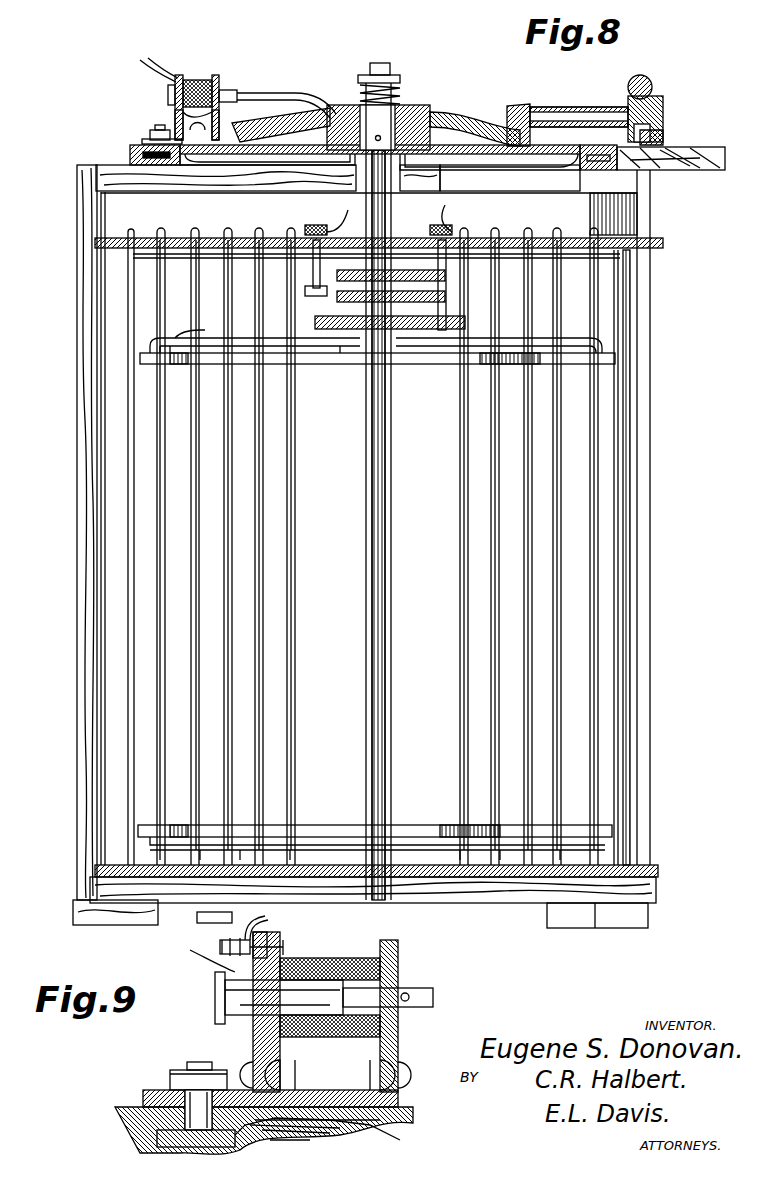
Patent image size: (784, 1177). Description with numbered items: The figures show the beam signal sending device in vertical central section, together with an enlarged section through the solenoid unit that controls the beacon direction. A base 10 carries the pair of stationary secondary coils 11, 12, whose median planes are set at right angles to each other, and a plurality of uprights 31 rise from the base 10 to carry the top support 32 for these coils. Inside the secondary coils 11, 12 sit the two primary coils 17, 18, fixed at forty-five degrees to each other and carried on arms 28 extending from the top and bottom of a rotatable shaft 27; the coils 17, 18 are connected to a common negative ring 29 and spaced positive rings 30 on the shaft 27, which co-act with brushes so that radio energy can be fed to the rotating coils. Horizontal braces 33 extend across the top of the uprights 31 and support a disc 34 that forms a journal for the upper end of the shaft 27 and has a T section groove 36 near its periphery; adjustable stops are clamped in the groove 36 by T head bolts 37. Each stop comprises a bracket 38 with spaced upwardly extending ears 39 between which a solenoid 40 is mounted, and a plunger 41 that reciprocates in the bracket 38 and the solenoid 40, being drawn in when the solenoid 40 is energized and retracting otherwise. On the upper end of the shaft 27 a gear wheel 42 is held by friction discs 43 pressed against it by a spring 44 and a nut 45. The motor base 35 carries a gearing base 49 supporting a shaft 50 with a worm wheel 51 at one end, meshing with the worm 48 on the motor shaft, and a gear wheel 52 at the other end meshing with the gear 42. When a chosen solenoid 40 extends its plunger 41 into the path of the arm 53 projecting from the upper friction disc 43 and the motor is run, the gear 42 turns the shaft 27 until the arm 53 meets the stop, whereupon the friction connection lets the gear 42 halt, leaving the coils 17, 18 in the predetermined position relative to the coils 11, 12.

In FIG. 8, the base 10 is at (655, 896).
In FIG. 8, the secondary coil 11 is at (590, 230).
In FIG. 8, the secondary coil 12 is at (628, 314).
In FIG. 8, the primary coil 17 is at (550, 422).
In FIG. 8, the primary coil 18 is at (157, 432).
In FIG. 8, the rotatable shaft 27 is at (392, 642).
In FIG. 8, the arm 28 is at (610, 358).
In FIG. 8, the common negative ring 29 is at (414, 252).
In FIG. 8, the positive ring 30 is at (340, 324).
In FIG. 8, the upright 31 is at (86, 300).
In FIG. 8, the top support 32 is at (666, 246).
In FIG. 8, the horizontal brace 33 is at (116, 172).
In FIG. 8, the disc 34 is at (243, 156).
In FIG. 9, the disc 34 is at (130, 1122).
In FIG. 8, the motor base 35 is at (700, 168).
In FIG. 8, the T section groove 36 is at (612, 158).
In FIG. 9, the T section groove 36 is at (157, 1141).
In FIG. 8, the T head bolt 37 is at (152, 134).
In FIG. 9, the T head bolt 37 is at (170, 1080).
In FIG. 8, the bracket 38 is at (144, 142).
In FIG. 9, the bracket 38 is at (143, 1097).
In FIG. 8, the arm or ear 39 is at (216, 84).
In FIG. 9, the arm or ear 39 is at (399, 954).
In FIG. 8, the solenoid 40 is at (188, 78).
In FIG. 9, the solenoid 40 is at (328, 960).
In FIG. 8, the plunger 41 is at (238, 92).
In FIG. 9, the plunger 41 is at (433, 997).
In FIG. 8, the gear wheel 42 is at (468, 124).
In FIG. 8, the friction disc 43 is at (426, 110).
In FIG. 8, the spring 44 is at (400, 90).
In FIG. 8, the nut 45 is at (392, 72).
In FIG. 8, the worm 48 is at (652, 86).
In FIG. 8, the gearing base 49 is at (657, 146).
In FIG. 8, the shaft 50 is at (588, 114).
In FIG. 8, the worm wheel 51 is at (648, 104).
In FIG. 8, the gear wheel 52 is at (518, 108).
In FIG. 8, the arm 53 is at (308, 94).